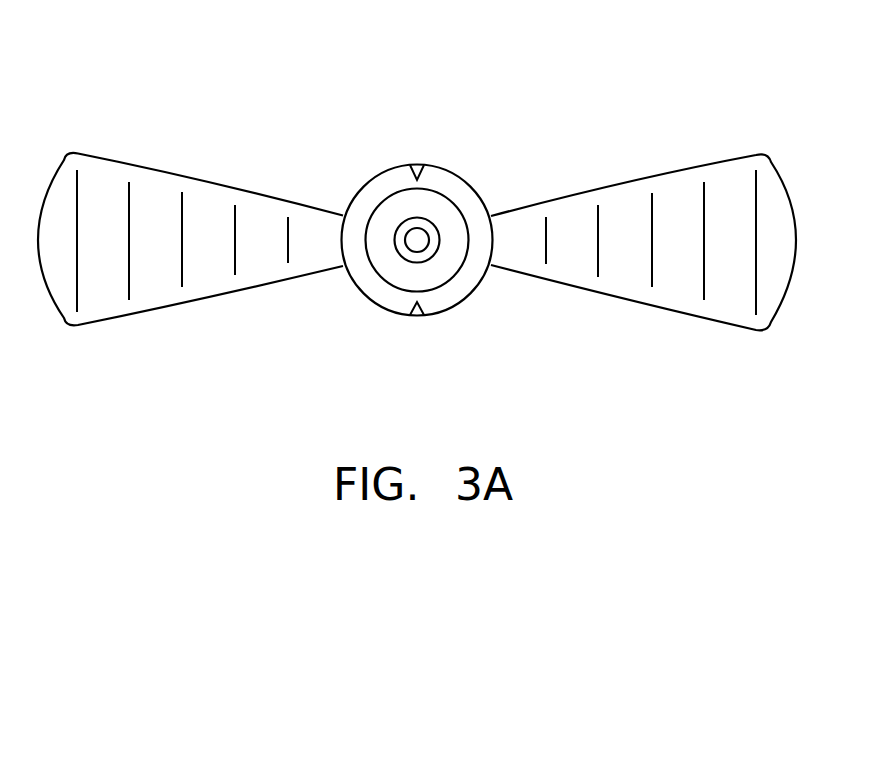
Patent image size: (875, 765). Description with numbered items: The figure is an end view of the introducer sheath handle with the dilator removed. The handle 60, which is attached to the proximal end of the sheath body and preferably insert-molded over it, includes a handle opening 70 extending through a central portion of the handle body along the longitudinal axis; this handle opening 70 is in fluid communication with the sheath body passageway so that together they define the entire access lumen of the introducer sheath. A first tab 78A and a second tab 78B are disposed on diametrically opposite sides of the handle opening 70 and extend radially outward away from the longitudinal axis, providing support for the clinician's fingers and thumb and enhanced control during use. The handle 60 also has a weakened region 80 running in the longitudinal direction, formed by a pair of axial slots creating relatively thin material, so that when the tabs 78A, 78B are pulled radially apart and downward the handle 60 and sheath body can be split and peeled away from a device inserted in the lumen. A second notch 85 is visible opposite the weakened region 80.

The handle 60 is at (434, 223).
The handle opening 70 is at (383, 218).
The first tab 78A is at (113, 183).
The second tab 78B is at (676, 287).
The weakened region 80 is at (425, 324).
The upper notch 85 is at (427, 158).